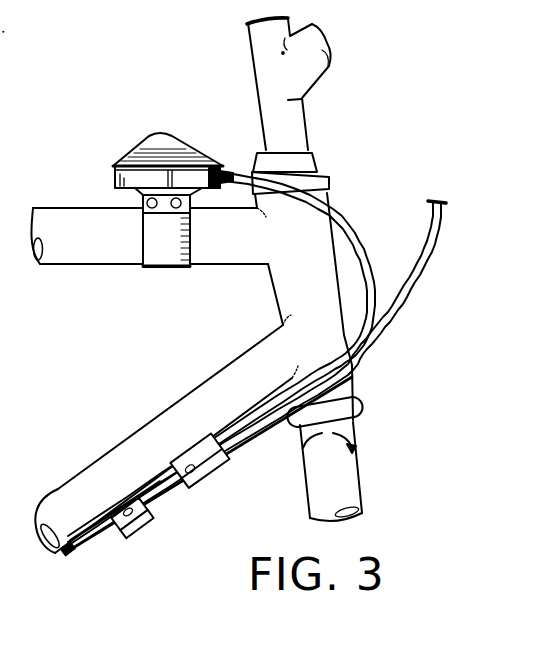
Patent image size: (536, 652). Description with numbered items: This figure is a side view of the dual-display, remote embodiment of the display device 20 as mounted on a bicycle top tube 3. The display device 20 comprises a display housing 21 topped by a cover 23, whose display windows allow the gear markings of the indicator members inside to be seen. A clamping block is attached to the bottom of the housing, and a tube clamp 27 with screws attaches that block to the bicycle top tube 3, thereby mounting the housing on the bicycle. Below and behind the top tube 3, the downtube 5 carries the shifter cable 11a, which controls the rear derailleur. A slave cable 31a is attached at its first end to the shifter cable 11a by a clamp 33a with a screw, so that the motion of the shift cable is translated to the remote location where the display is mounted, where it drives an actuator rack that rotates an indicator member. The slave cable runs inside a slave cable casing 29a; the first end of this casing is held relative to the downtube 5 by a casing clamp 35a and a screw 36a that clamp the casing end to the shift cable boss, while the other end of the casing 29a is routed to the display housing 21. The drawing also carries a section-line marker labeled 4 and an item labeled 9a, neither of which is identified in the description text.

The bicycle top tube 3 is at (63, 250).
The section line 4- 4 is at (163, 129).
The downtube 5 is at (57, 488).
The cable 9a is at (403, 304).
The shifter cable 11a is at (82, 550).
The display device 20 is at (139, 191).
The display housing 21 is at (114, 178).
The cover 23 is at (150, 146).
The tube clamp 27 is at (162, 243).
The slave cable casing 29a is at (358, 248).
The slave cable 31a is at (147, 479).
The clamp 33a is at (140, 540).
The casing clamp 35a is at (163, 414).
The screw 36a is at (198, 453).